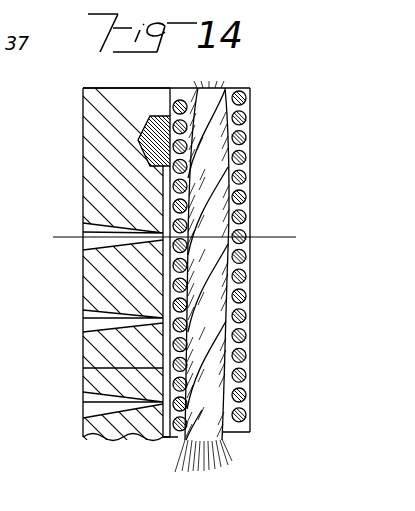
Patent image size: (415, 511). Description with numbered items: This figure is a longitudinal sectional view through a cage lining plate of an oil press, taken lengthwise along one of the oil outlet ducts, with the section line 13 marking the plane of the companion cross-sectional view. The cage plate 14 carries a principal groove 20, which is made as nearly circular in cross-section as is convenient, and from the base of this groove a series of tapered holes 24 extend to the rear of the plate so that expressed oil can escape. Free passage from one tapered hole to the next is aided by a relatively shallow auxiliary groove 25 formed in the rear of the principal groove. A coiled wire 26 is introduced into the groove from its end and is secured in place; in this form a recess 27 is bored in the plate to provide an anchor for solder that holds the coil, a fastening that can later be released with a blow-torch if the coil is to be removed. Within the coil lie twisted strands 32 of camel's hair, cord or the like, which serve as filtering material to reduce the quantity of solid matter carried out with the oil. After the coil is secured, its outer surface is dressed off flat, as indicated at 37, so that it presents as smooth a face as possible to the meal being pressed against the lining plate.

The section line 13— 13 is at (48, 229).
The cage plate 14 is at (97, 350).
The groove 20 is at (247, 254).
The tapered holes 24 is at (88, 323).
The auxiliary groove 25 is at (100, 368).
The coiled wire 26 is at (247, 227).
The recess 27 is at (147, 140).
The twisted strands 32 is at (212, 168).
The dressed-off flat outer surface of coil 37 is at (250, 322).